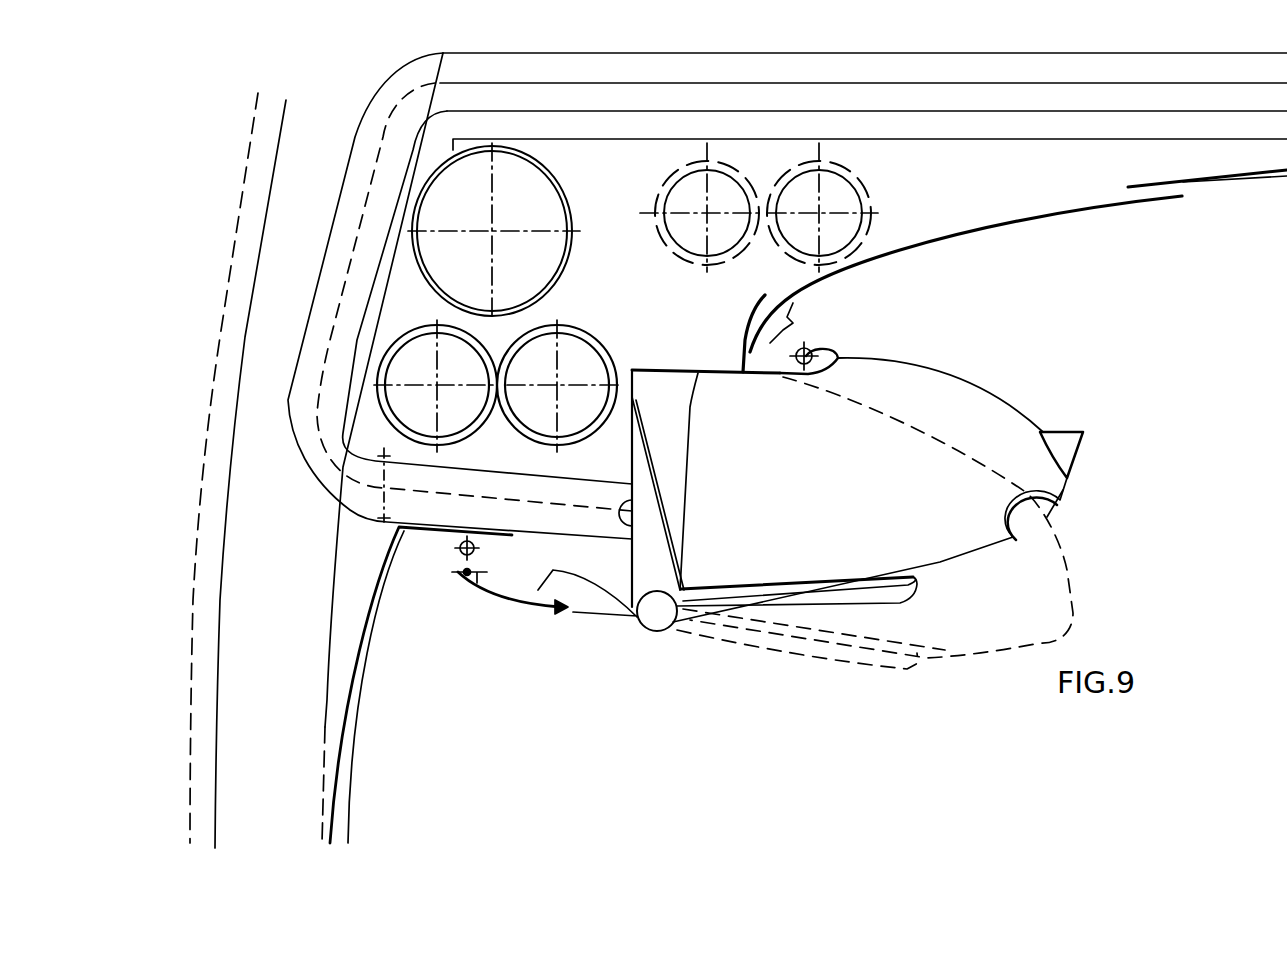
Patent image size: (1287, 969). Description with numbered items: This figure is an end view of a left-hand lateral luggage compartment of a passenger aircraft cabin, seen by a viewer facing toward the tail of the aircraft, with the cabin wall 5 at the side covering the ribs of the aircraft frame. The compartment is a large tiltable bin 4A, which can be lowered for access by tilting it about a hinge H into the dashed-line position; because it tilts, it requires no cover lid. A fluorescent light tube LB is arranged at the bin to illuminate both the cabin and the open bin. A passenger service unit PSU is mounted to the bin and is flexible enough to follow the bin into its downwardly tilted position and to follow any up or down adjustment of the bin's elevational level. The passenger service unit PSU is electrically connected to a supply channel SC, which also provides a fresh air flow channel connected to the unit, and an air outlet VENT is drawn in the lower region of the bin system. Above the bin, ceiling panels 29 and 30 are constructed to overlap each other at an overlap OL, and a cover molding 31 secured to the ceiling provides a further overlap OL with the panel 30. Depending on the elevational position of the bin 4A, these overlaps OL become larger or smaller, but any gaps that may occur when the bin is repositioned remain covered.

The cabin wall 5 is at (380, 538).
The ceiling panel 29 is at (1130, 187).
The ceiling panel 30 is at (1068, 212).
The cover molding 31 is at (760, 307).
The overlap OL is at (1193, 212).
The fluorescent light tube LB is at (836, 358).
The hinge H is at (693, 582).
The bin 4A is at (1128, 428).
The air vent VENT is at (553, 590).
The supply channel SC is at (643, 623).
The passenger service unit PSU is at (748, 650).